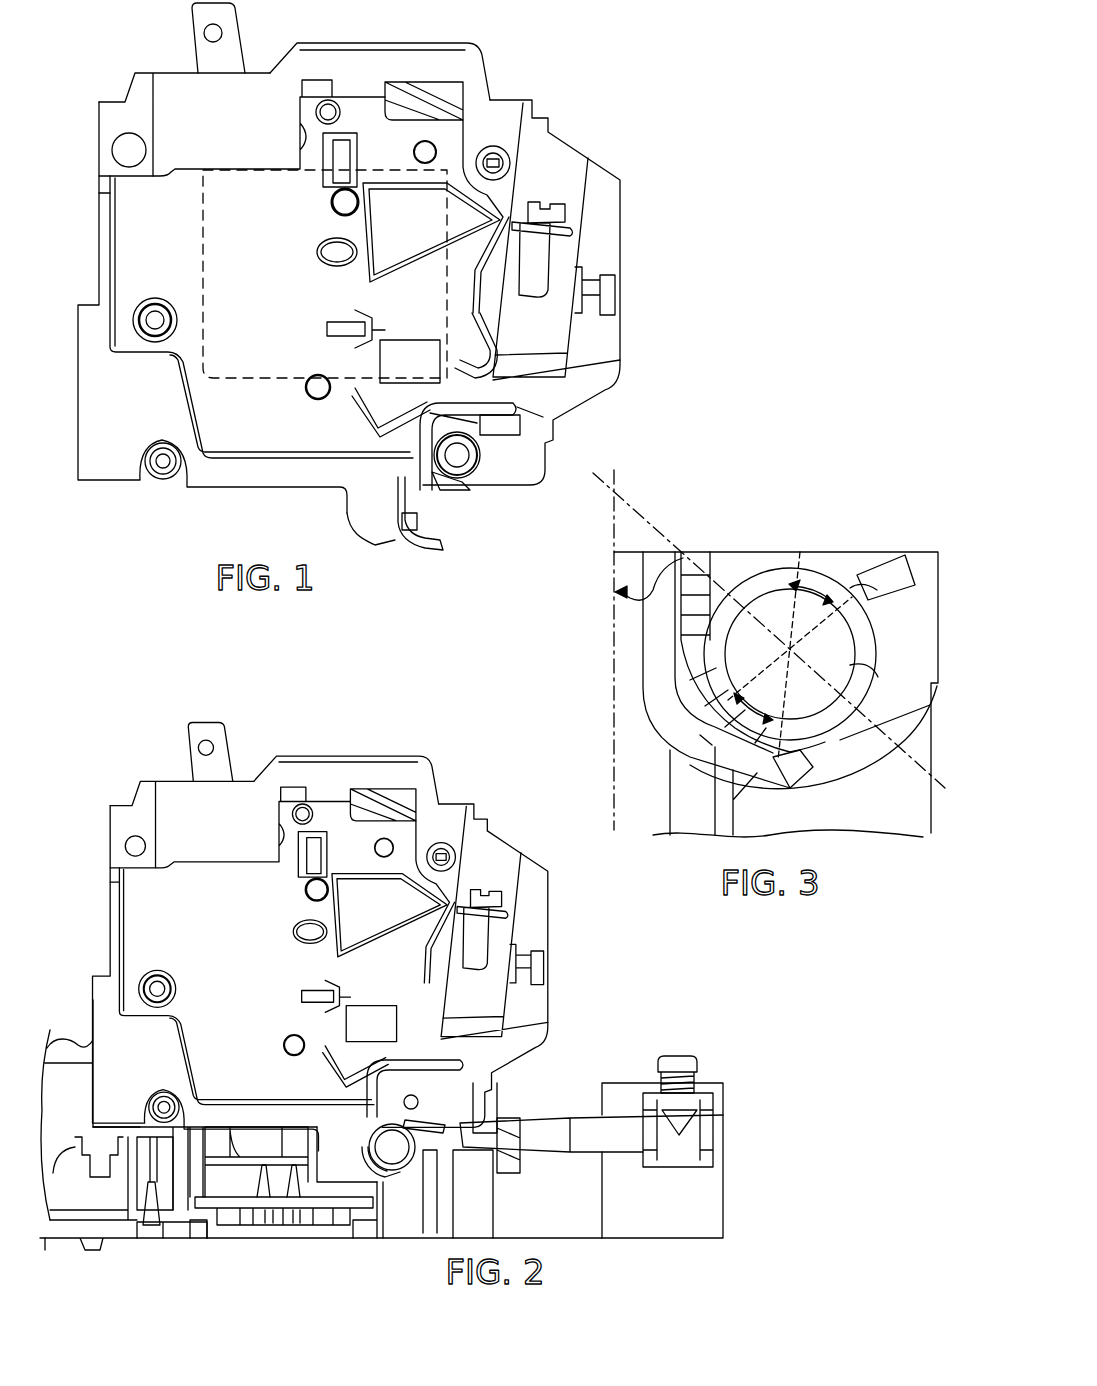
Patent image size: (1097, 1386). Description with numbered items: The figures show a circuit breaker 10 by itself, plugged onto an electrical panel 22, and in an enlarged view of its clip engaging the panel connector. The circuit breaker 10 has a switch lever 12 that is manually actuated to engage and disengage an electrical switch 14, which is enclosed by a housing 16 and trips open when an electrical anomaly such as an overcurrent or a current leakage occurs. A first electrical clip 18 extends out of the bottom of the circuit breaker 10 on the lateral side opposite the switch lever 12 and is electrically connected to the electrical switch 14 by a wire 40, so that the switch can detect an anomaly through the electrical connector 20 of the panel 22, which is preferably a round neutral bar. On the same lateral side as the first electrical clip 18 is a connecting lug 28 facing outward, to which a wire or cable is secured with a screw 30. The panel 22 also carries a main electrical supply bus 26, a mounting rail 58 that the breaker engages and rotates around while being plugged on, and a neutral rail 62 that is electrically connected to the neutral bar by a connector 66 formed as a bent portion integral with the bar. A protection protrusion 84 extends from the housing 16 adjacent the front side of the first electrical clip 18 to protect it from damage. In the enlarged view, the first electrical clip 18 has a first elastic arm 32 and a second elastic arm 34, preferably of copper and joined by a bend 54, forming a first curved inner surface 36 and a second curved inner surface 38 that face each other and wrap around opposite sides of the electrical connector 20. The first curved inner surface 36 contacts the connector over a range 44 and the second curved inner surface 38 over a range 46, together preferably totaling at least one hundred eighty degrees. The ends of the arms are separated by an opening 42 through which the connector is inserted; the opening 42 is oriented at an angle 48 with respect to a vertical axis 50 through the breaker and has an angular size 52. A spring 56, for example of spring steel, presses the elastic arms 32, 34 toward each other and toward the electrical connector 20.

In FIG. 1, the circuit breaker 10 is at (564, 102).
In FIG. 2, the circuit breaker 10 is at (486, 797).
In FIG. 1, the switch lever 12 is at (231, 14).
In FIG. 2, the switch lever 12 is at (224, 740).
In FIG. 1, the electrical switch 14 is at (378, 170).
In FIG. 2, the electrical switch 14 is at (389, 915).
In FIG. 1, the housing 16 is at (476, 45).
In FIG. 2, the housing 16 is at (424, 766).
In FIG. 1, the first electrical clip 18 is at (447, 508).
In FIG. 2, the first electrical clip 18 is at (368, 1112).
In FIG. 3, the first electrical clip 18 is at (687, 647).
In FIG. 2, the electrical connector 20 is at (400, 1153).
In FIG. 3, the electrical connector 20 is at (820, 735).
In FIG. 2, the electrical panel 22 is at (602, 1222).
In FIG. 2, the main electrical supply bus 26 is at (78, 1065).
In FIG. 1, the connecting lug 28 is at (613, 327).
In FIG. 2, the connecting lug 28 is at (540, 993).
In FIG. 1, the screw 30 is at (557, 207).
In FIG. 2, the screw 30 is at (487, 890).
In FIG. 1, the first elastic arm 32 is at (445, 492).
In FIG. 2, the first elastic arm 32 is at (413, 1128).
In FIG. 3, the first elastic arm 32 is at (882, 572).
In FIG. 1, the second elastic arm 34 is at (433, 526).
In FIG. 2, the second elastic arm 34 is at (397, 1163).
In FIG. 3, the second elastic arm 34 is at (670, 735).
In FIG. 3, the first curved inner surface 36 is at (870, 592).
In FIG. 3, the second curved inner surface 38 is at (705, 718).
In FIG. 1, the wire 40 is at (487, 363).
In FIG. 3, the opening 42 is at (822, 778).
In FIG. 3, the range 44 is at (792, 572).
In FIG. 3, the range 46 is at (753, 714).
In FIG. 3, the angle 48 is at (650, 592).
In FIG. 3, the vertical axis 50 is at (614, 700).
In FIG. 3, the size 52 is at (866, 685).
In FIG. 1, the bend 54 is at (553, 420).
In FIG. 1, the spring 56 is at (452, 453).
In FIG. 2, the spring 56 is at (410, 1102).
In FIG. 3, the spring 56 is at (705, 757).
In FIG. 2, the mounting rail 58 is at (520, 1153).
In FIG. 2, the neutral rail 62 is at (688, 1108).
In FIG. 2, the connector 66 is at (590, 1123).
In FIG. 1, the protection protrusion 84 is at (347, 513).